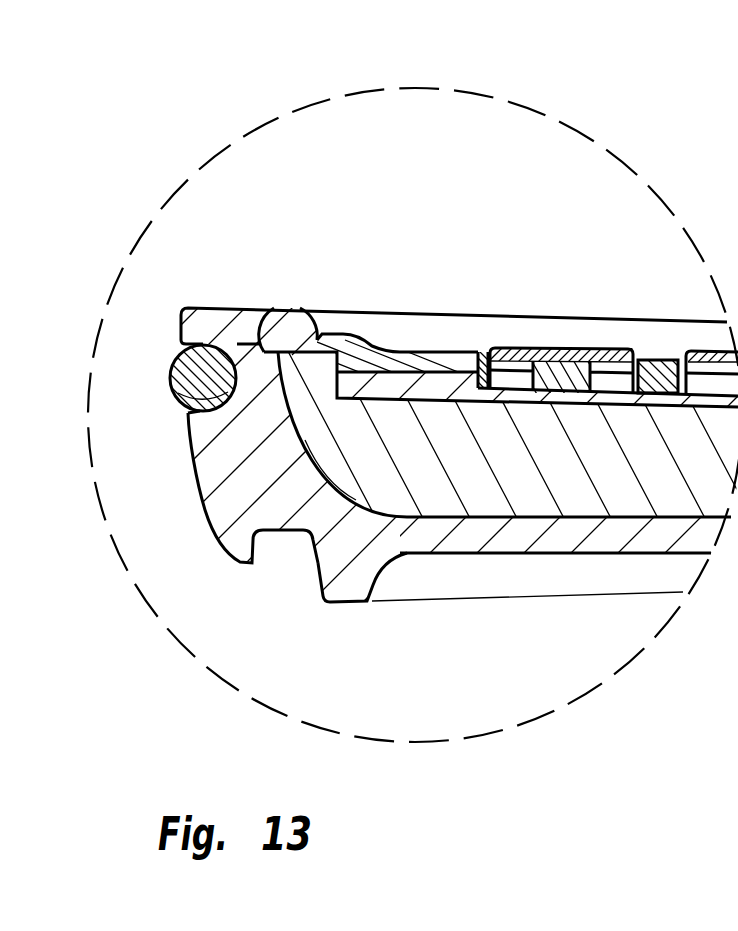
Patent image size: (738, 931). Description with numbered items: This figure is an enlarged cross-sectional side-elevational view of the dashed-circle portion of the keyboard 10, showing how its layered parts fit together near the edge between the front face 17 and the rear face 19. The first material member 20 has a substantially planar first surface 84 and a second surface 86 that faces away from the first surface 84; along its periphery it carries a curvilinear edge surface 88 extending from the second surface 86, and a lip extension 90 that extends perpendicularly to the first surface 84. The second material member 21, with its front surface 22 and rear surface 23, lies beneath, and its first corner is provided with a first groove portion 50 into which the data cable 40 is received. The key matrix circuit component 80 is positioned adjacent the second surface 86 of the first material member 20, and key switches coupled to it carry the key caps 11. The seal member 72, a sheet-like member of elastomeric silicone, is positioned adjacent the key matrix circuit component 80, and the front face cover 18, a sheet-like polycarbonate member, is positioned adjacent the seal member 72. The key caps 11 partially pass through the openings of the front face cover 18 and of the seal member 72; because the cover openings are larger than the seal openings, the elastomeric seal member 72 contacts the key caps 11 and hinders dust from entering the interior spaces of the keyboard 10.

The keyboard 10 is at (378, 130).
The key caps 11 is at (535, 346).
The front face 17 is at (482, 137).
The front face cover 18 is at (414, 356).
The rear face 19 is at (613, 618).
The first material member 20 is at (461, 484).
The second material member 21 is at (400, 545).
The front surface 22 is at (217, 307).
The rear surface 23 is at (345, 602).
The data cable 40 is at (170, 370).
The first groove portion 50 is at (186, 415).
The seal member 72 is at (484, 353).
The key matrix circuit component 80 is at (384, 348).
The first surface 84 is at (448, 353).
The second surface 86 is at (530, 523).
The curvilinear edge surface 88 is at (232, 520).
The lip extension 90 is at (268, 318).